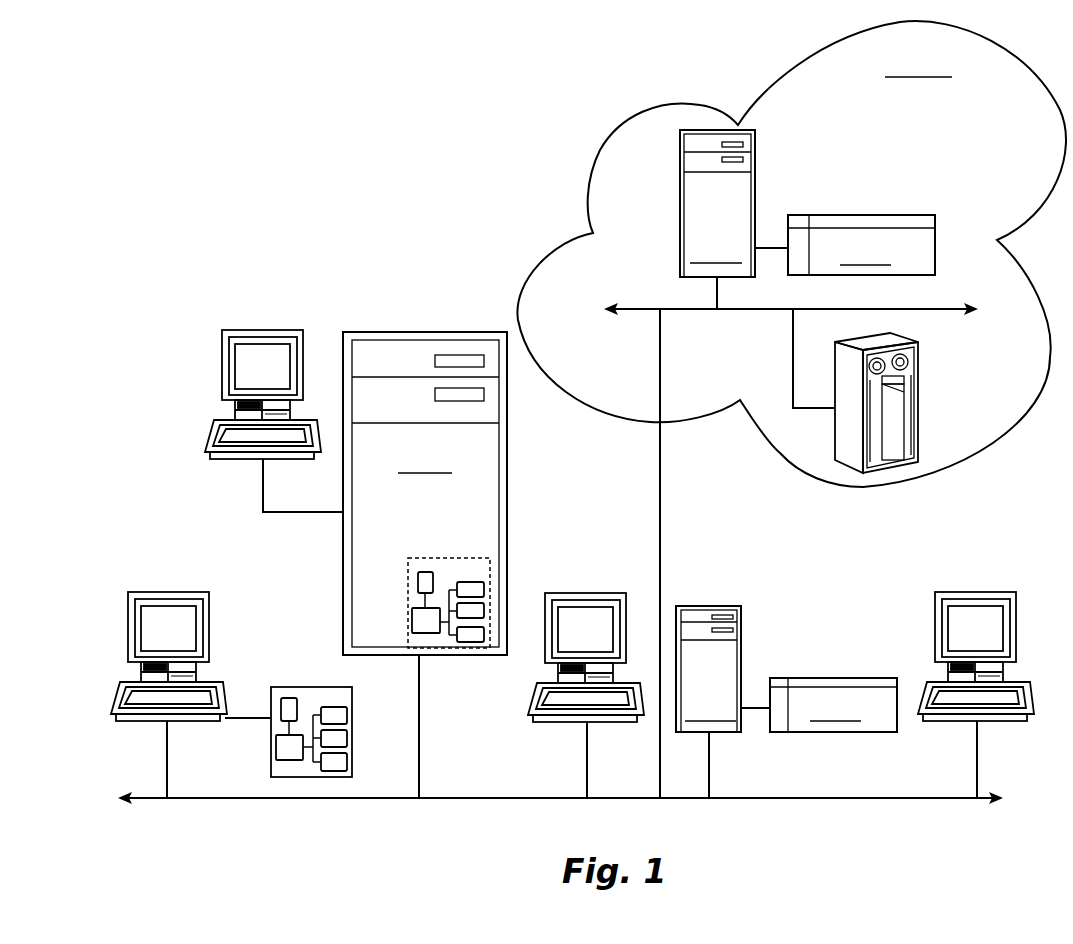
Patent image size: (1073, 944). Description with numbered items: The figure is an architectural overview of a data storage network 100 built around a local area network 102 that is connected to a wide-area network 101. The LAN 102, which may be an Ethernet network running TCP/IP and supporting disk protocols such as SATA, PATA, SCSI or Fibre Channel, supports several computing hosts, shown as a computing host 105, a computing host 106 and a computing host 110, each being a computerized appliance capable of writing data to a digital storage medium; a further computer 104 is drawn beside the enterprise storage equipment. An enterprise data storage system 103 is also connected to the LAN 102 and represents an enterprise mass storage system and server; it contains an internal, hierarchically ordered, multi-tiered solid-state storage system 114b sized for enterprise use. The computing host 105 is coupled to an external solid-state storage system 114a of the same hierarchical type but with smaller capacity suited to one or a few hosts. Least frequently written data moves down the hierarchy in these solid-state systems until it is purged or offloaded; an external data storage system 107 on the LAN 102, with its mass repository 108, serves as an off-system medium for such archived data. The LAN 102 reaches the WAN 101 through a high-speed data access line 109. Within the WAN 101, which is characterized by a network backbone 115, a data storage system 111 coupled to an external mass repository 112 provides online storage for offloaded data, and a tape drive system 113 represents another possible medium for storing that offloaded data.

The data storage network 100 is at (222, 243).
The wide-area-network (WAN) 101 is at (578, 212).
The local area network (LAN) 102 is at (540, 796).
The enterprise data storage system (DSS) 103 is at (427, 332).
The client computer 104 is at (222, 372).
The computing host 105 is at (128, 625).
The computing host 106 is at (600, 593).
The external data storage system (DSS) 107 is at (742, 640).
The mass repository 108 is at (822, 733).
The high-speed data access line 109 is at (661, 527).
The computing host 110 is at (977, 592).
The data storage system (DSS) 111 is at (756, 175).
The external mass repository 112 is at (862, 215).
The tape drive system 113 is at (919, 407).
The solid-state storage system 114a is at (316, 687).
The solid-state storage system 114b is at (455, 558).
The network backbone 115 is at (762, 312).